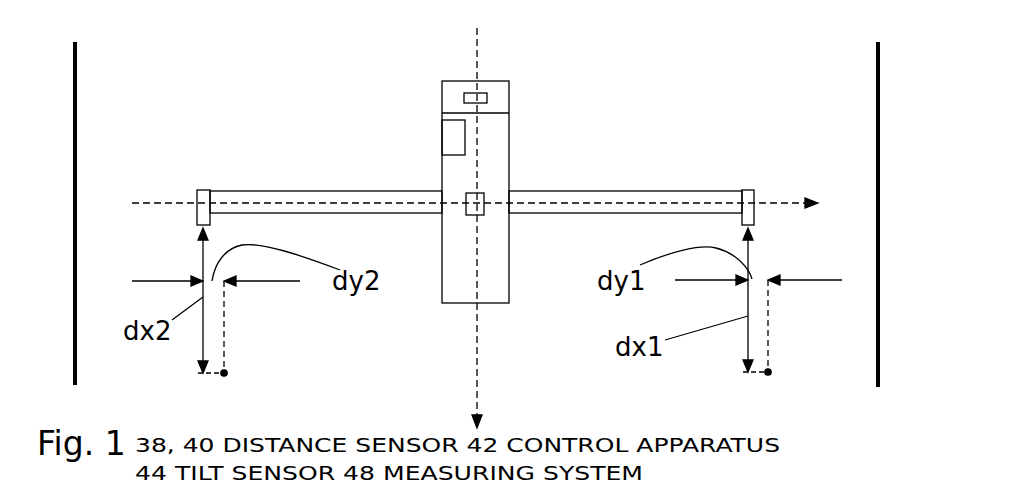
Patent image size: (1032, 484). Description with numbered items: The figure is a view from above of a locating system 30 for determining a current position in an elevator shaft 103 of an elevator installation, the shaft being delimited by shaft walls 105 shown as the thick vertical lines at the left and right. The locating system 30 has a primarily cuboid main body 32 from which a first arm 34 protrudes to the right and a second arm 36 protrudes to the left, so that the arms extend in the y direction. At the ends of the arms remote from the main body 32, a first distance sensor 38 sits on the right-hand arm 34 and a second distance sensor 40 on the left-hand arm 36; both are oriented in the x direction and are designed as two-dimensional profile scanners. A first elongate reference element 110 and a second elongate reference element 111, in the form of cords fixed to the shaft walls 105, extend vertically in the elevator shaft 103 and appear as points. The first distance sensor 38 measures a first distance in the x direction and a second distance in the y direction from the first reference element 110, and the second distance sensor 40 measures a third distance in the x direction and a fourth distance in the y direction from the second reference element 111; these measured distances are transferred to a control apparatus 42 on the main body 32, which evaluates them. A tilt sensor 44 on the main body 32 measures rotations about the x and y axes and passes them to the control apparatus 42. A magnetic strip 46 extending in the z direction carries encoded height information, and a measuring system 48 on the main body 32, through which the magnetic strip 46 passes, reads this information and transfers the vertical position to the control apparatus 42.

The locating system 30 is at (635, 58).
The main body 32 is at (510, 147).
The first arm 34 is at (658, 191).
The second arm 36 is at (277, 191).
The first distance sensor 38 is at (748, 190).
The second distance sensor 40 is at (203, 190).
The control apparatus 42 is at (453, 139).
The tilt sensor 44 is at (470, 195).
The magnetic strip 46 is at (466, 96).
The measuring system 48 is at (510, 92).
The elevator shaft 103 is at (836, 122).
The shaft wall 105 is at (78, 78).
The first elongate reference element 110 is at (768, 372).
The second elongate reference element 111 is at (224, 373).